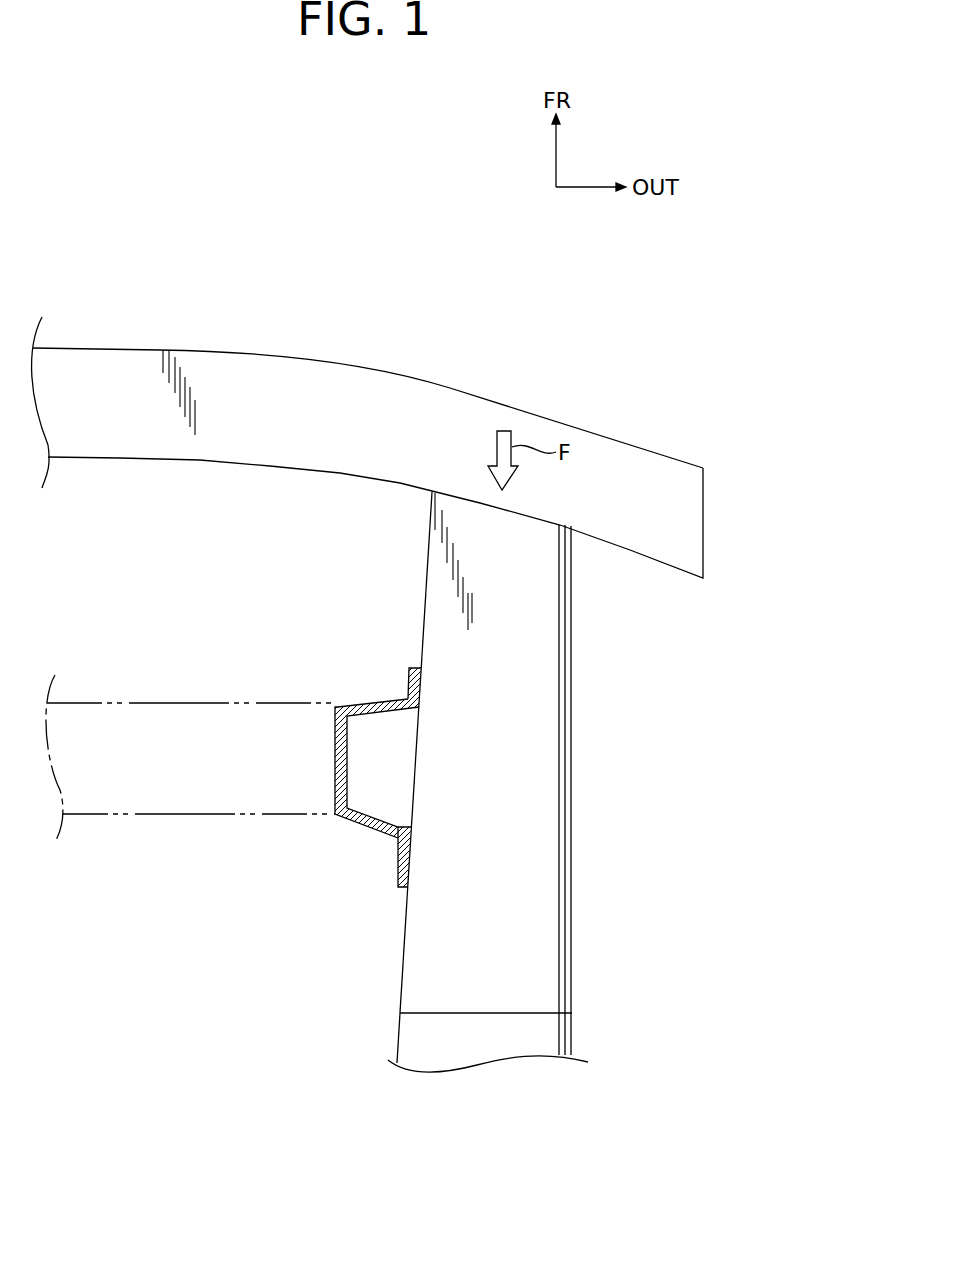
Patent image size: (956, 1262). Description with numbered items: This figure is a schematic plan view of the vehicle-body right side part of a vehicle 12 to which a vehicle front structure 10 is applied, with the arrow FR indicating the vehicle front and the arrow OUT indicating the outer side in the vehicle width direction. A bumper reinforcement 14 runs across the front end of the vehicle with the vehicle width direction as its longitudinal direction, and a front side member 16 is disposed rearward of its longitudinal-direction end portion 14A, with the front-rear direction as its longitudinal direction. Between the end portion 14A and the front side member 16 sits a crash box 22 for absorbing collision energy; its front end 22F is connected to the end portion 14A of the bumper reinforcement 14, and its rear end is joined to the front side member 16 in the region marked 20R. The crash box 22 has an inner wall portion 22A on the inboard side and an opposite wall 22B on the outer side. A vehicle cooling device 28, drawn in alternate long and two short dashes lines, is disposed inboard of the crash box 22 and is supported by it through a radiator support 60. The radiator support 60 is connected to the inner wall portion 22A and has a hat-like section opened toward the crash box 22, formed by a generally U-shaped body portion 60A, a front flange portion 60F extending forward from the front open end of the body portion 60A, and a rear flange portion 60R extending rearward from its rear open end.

The vehicle front structure 10 is at (379, 671).
The vehicle 12 is at (678, 336).
The bumper reinforcement 14 is at (260, 354).
The longitudinal-direction end portion of the bumper reinforcement 14A is at (515, 400).
The front side member 16 is at (573, 1032).
The rear end of crash box 20R is at (400, 988).
The crash box 22 is at (572, 773).
The inner wall portion 22A is at (420, 632).
The outer wall of crash box 22B is at (573, 632).
The front end of the crash box 22F is at (430, 517).
The vehicle cooling device 28 is at (108, 815).
The radiator support 60 is at (347, 820).
The body portion 60A is at (378, 830).
The front flange portion 60F is at (408, 683).
The rear flange portion 60R is at (402, 885).